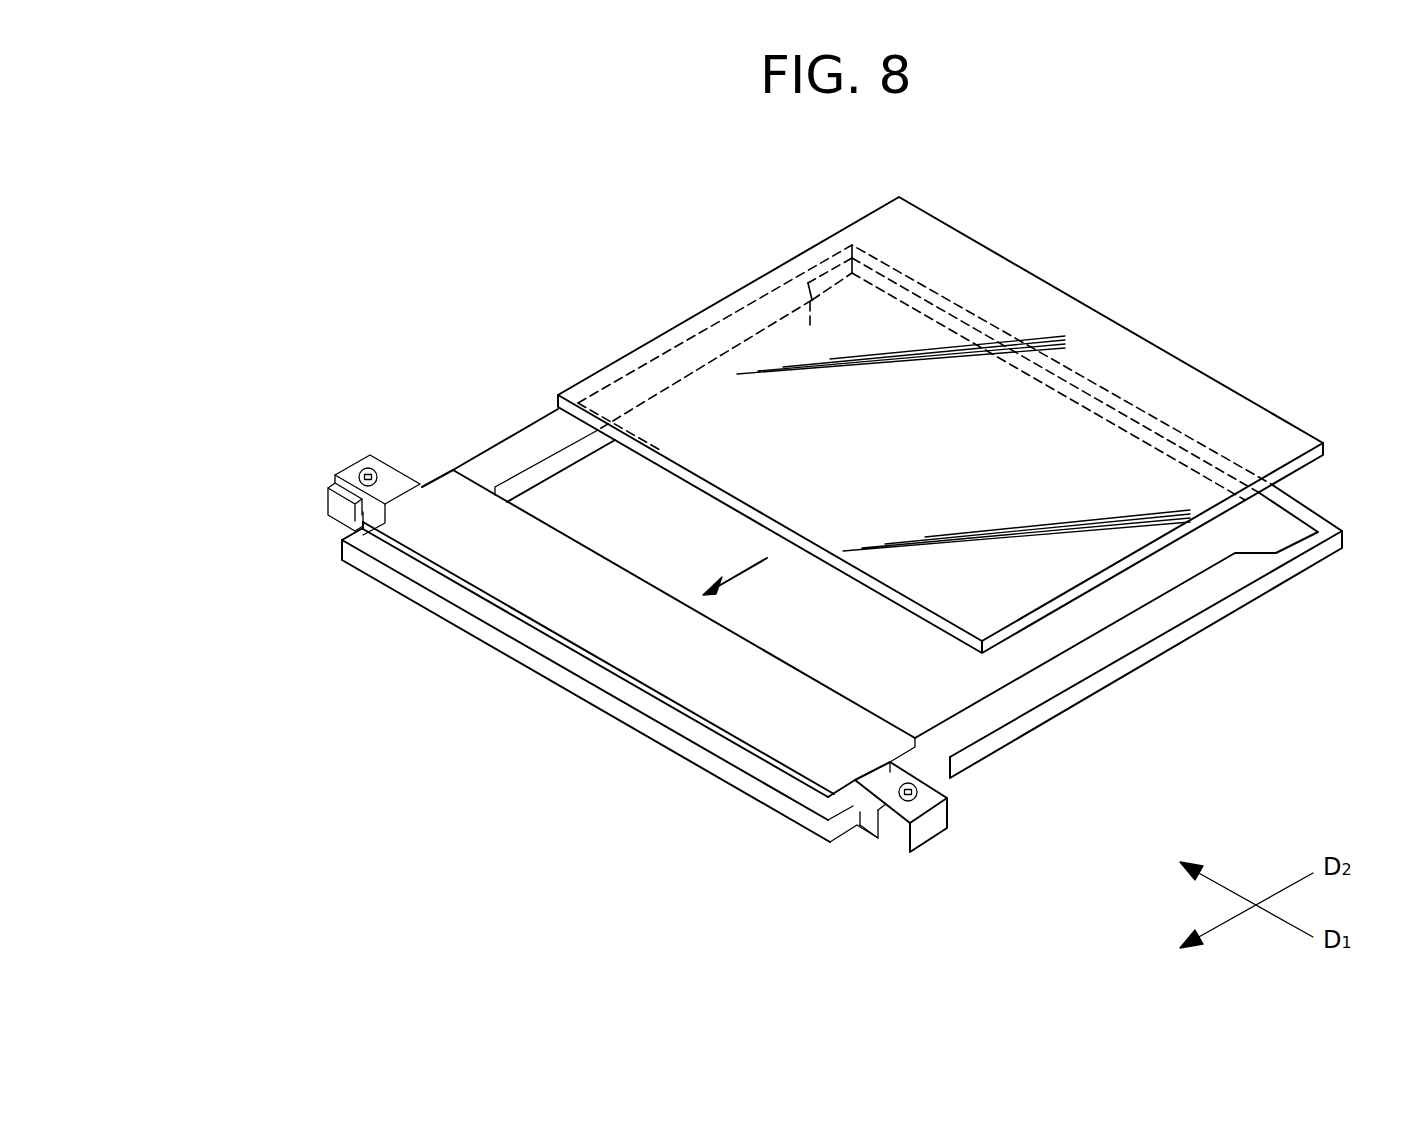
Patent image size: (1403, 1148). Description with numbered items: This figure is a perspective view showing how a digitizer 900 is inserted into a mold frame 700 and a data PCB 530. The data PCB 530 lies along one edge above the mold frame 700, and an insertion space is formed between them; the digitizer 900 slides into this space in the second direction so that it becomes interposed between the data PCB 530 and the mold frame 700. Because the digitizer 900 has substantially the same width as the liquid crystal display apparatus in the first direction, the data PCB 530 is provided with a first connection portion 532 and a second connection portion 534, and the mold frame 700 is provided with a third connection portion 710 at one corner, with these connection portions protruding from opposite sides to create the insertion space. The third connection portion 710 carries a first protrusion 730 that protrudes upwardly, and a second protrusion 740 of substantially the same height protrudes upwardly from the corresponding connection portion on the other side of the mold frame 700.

The digitizer 900 is at (1075, 313).
The mold frame 700 is at (1058, 679).
The data PCB 530 is at (637, 655).
The first connection portion 532 is at (893, 772).
The second connection portion 534 is at (352, 472).
The third connection portion 710 is at (930, 828).
The first protrusion 730 is at (888, 823).
The second protrusion 740 is at (335, 498).